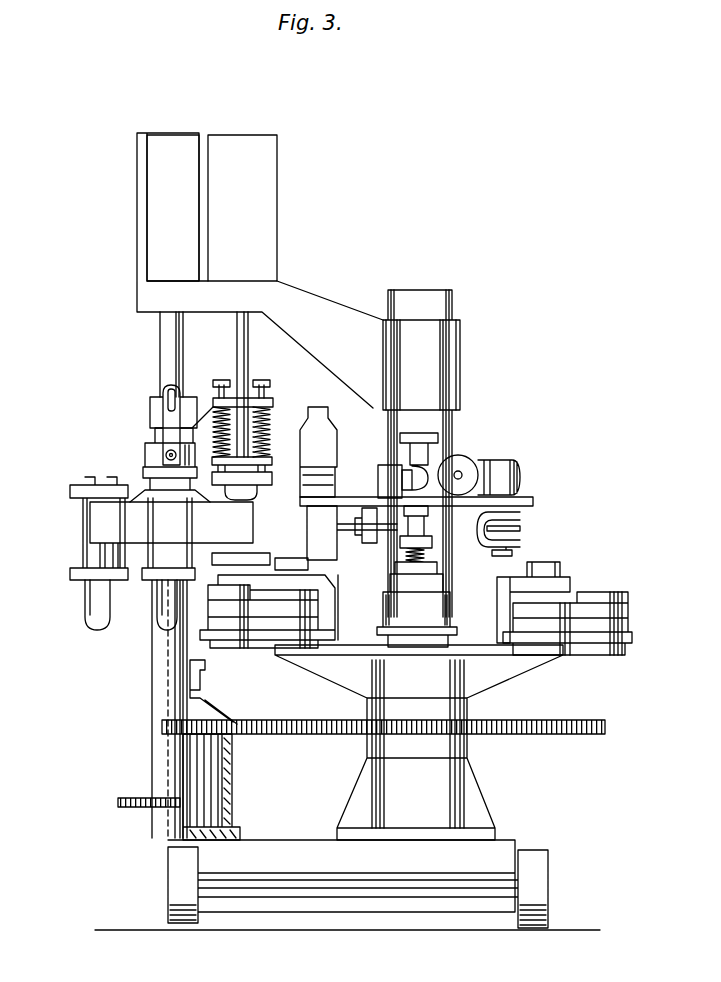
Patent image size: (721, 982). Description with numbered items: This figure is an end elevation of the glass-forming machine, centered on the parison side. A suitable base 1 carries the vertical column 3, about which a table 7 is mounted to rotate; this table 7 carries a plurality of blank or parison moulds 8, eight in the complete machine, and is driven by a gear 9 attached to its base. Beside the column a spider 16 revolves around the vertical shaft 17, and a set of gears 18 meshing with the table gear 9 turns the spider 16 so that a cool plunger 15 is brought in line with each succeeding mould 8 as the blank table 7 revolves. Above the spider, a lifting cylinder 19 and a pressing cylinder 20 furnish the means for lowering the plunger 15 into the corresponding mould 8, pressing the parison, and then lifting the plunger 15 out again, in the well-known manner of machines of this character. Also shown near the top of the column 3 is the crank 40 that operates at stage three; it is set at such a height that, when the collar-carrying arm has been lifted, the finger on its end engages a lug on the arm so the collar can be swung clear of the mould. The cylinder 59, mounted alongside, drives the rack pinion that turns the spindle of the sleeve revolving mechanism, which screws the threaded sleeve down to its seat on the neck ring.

The base 1 is at (493, 853).
The vertical column 3 is at (428, 300).
The table 7 is at (498, 648).
The blank or parison moulds 8 is at (638, 630).
The gear 9 is at (297, 720).
The plunger 15 is at (95, 607).
The spider 16 is at (103, 520).
The vertical shaft 17 is at (163, 650).
The set of gears 18 is at (157, 725).
The lifting cylinder 19 is at (166, 147).
The pressing cylinder 20 is at (258, 196).
The crank 40 is at (512, 553).
The cylinder 59 is at (493, 470).